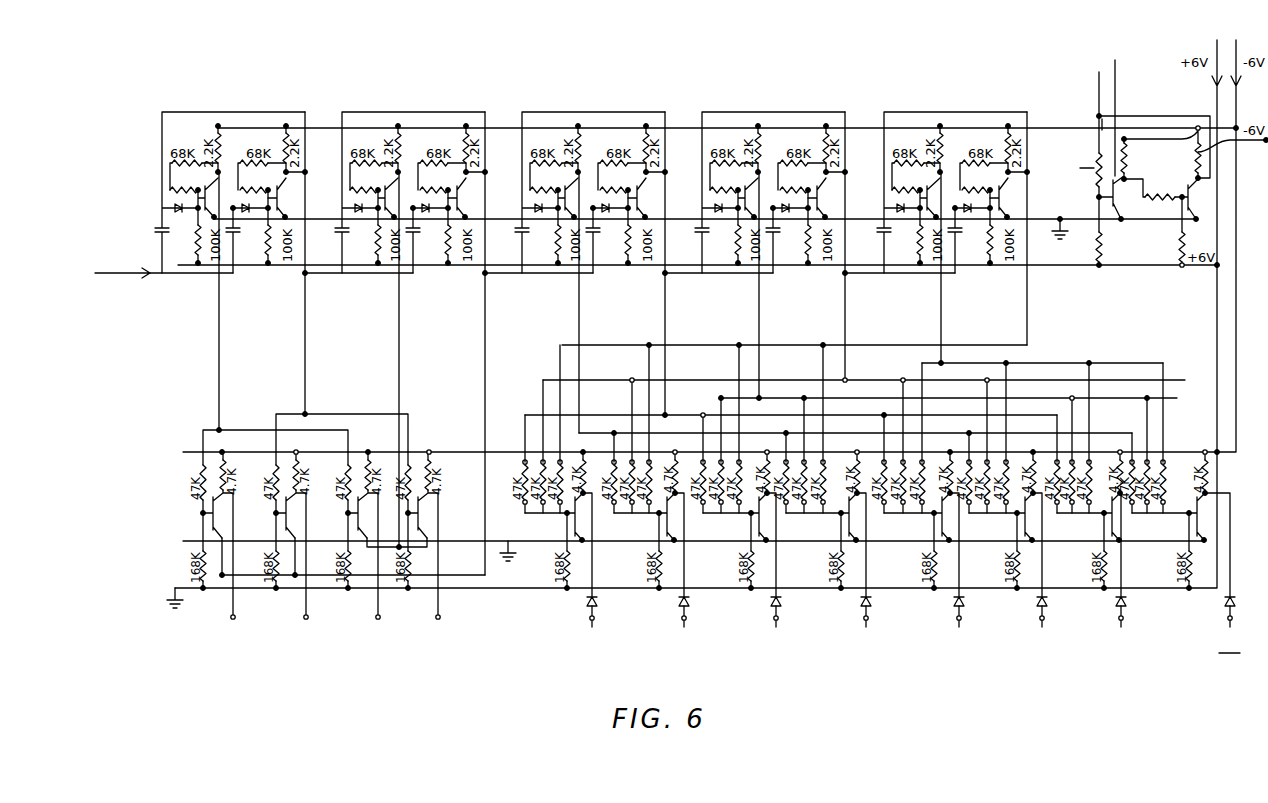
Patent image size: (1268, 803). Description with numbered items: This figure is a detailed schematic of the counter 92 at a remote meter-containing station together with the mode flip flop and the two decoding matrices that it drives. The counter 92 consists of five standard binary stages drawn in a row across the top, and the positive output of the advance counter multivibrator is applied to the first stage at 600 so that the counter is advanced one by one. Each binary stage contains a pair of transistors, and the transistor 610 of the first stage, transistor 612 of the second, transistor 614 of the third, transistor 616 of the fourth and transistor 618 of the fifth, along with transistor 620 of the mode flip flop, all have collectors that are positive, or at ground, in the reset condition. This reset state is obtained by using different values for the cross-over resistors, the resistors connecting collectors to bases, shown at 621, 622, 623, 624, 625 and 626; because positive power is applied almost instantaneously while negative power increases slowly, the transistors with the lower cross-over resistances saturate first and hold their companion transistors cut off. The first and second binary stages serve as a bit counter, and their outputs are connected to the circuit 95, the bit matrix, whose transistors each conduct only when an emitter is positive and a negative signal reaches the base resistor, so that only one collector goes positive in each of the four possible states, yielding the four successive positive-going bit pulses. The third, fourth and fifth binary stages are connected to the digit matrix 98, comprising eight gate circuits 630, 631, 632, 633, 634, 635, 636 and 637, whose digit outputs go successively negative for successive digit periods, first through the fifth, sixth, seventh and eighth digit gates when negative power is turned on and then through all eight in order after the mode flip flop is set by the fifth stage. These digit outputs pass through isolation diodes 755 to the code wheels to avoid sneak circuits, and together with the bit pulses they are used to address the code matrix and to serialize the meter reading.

The counter 92 is at (774, 56).
The bit matrix 95 is at (356, 674).
The digit matrix 98 is at (900, 680).
The first stage input of counter 600 is at (163, 275).
The transistor 610 is at (286, 197).
The transistor 612 is at (466, 197).
The transistor 614 is at (646, 197).
The transistor 616 is at (826, 197).
The transistor 618 is at (1008, 197).
The transistor 620 is at (1198, 200).
The cross-over resistors 621 is at (228, 271).
The cross-over resistors 622 is at (396, 343).
The cross-over resistors 623 is at (576, 272).
The cross-over resistors 624 is at (756, 255).
The cross-over resistors 625 is at (937, 237).
The cross-over resistors 626 is at (1167, 213).
The gate circuit 630 is at (556, 486).
The gate circuit 631 is at (642, 485).
The gate circuit 632 is at (732, 485).
The gate circuit 633 is at (819, 485).
The gate circuit 634 is at (914, 495).
The gate circuit 635 is at (998, 494).
The gate circuit 636 is at (1090, 494).
The gate circuit 637 is at (1177, 495).
The isolation diodes 755 is at (586, 610).